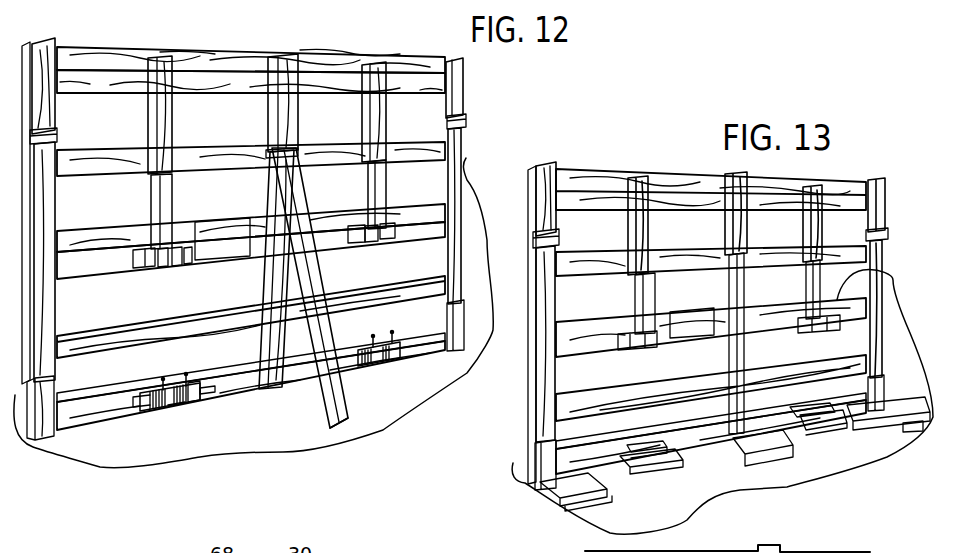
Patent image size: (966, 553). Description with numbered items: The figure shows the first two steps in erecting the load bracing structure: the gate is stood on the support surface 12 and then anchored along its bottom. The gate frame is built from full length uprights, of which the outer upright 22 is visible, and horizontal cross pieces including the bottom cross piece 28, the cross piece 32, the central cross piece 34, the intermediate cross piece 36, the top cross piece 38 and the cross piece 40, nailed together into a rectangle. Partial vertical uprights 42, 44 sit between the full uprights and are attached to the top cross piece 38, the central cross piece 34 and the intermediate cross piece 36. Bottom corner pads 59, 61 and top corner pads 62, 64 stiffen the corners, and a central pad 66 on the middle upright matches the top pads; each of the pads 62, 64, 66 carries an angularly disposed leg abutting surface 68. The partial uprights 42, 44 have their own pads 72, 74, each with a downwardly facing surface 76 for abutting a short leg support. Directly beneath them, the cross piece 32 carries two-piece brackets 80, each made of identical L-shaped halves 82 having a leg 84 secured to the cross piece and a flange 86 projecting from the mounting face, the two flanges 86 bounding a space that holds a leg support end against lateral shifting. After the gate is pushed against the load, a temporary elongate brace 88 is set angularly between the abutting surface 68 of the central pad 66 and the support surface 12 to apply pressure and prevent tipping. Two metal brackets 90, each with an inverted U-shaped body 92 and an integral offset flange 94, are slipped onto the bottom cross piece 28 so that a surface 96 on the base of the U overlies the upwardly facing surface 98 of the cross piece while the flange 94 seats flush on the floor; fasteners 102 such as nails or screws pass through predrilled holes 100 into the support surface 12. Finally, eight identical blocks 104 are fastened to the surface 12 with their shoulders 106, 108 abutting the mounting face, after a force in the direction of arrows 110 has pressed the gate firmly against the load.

In FIG. 12, the support surface 12 is at (340, 433).
In FIG. 12, the full length upright 22 is at (450, 187).
In FIG. 12, the bottom cross piece 28 is at (100, 413).
In FIG. 12, the cross piece 32 is at (102, 275).
In FIG. 12, the central cross piece 34 is at (84, 257).
In FIG. 12, the intermediate cross piece 36 is at (112, 175).
In FIG. 12, the top cross piece 38 is at (99, 88).
In FIG. 12, the horizontal cross piece 40 is at (121, 65).
In FIG. 12, the partial vertical upright 42 is at (163, 112).
In FIG. 12, the partial vertical upright 44 is at (374, 63).
In FIG. 12, the bottom corner pad 59 is at (57, 450).
In FIG. 12, the bottom corner pad 61 is at (471, 362).
In FIG. 12, the top corner pad 62 is at (46, 36).
In FIG. 12, the top corner pad 64 is at (460, 57).
In FIG. 12, the central pad 66 is at (298, 63).
In FIG. 12, the leg abutting surface 68 is at (57, 160).
In FIG. 12, the pad 72 is at (163, 208).
In FIG. 12, the pad 74 is at (388, 200).
In FIG. 12, the downwardly facing surface 76 is at (170, 264).
In FIG. 12, the two-piece bracket 80 is at (181, 276).
In FIG. 12, the L-shaped half 82 is at (137, 267).
In FIG. 12, the leg 84 is at (143, 248).
In FIG. 12, the flange 86 is at (151, 268).
In FIG. 12, the temporary elongate brace 88 is at (338, 405).
In FIG. 12, the metal bracket 90 is at (165, 414).
In FIG. 12, the U-shaped body 92 is at (190, 392).
In FIG. 12, the offset flange 94 is at (194, 414).
In FIG. 12, the surface 96 is at (143, 397).
In FIG. 12, the upwardly facing surface 98 is at (262, 388).
In FIG. 12, the predrilled hole 100 is at (167, 412).
In FIG. 12, the fastener 102 is at (163, 392).
In FIG. 13, the block 104 is at (596, 521).
In FIG. 13, the shoulder 106 is at (521, 467).
In FIG. 13, the shoulder 108 is at (637, 450).
In FIG. 13, the arrow 110 is at (600, 521).